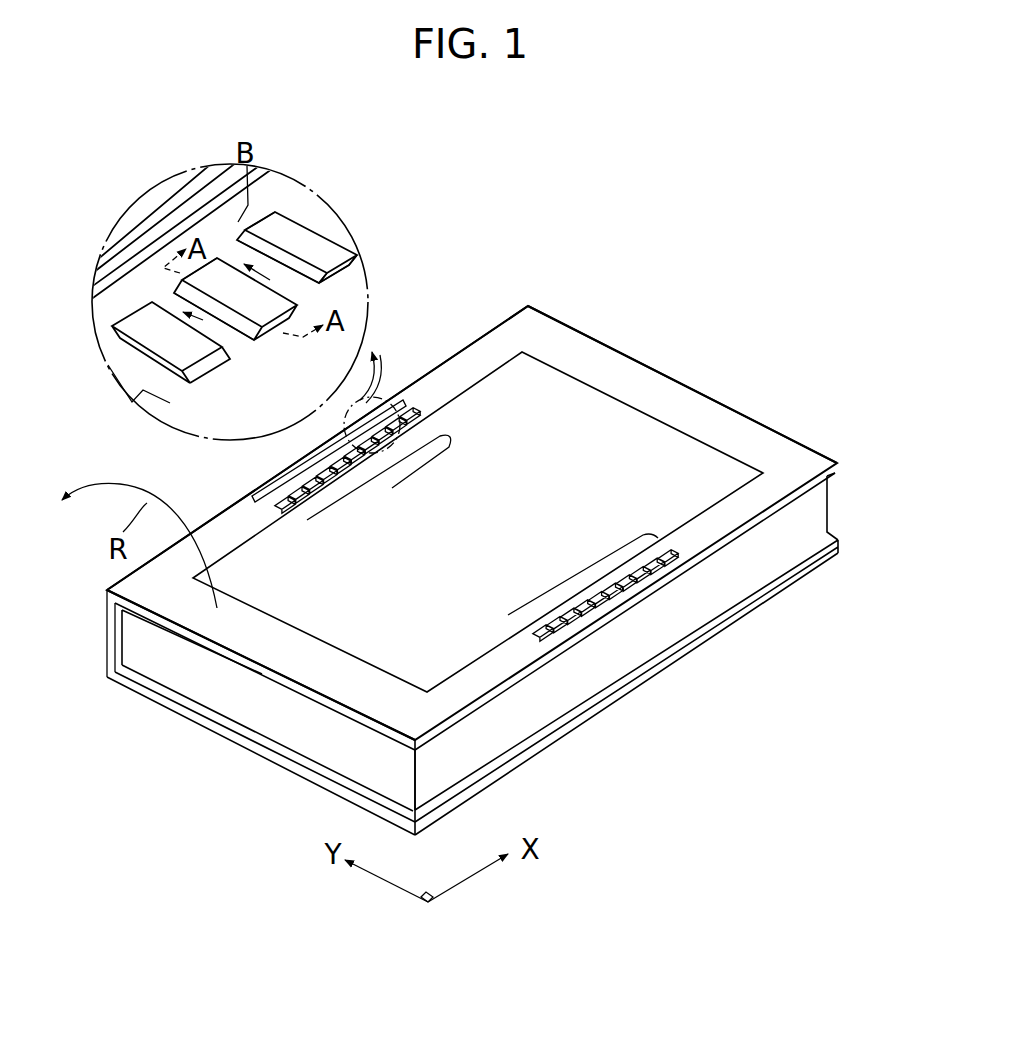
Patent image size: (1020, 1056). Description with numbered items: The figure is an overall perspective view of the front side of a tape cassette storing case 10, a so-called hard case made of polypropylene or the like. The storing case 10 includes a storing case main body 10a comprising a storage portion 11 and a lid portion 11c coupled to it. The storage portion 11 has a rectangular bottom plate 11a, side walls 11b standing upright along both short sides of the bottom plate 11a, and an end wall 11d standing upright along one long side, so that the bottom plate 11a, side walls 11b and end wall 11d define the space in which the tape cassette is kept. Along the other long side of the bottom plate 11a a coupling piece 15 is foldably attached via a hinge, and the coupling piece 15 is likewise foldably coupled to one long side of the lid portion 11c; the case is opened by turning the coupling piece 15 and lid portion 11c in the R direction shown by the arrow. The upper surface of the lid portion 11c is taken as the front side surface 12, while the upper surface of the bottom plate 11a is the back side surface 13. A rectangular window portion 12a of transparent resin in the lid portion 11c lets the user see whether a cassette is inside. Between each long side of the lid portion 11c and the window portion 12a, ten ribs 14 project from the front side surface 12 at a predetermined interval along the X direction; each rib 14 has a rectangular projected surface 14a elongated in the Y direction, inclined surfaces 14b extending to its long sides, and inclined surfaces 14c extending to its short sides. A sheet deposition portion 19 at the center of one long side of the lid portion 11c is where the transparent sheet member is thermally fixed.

The tape cassette storing case 10 is at (677, 318).
The storing case main body 10a is at (746, 396).
The storage portion 11 is at (830, 500).
The bottom plate 11a is at (570, 686).
The side walls 11b is at (265, 710).
The lid portion 11c is at (585, 343).
The end wall 11d is at (777, 548).
The front side surface 12 is at (763, 443).
The window portion 12a is at (618, 432).
The back side surface 13 is at (722, 630).
The ribs 14 is at (314, 232).
The projected surface 14a is at (348, 265).
The inclined surfaces (first inclined surfaces) 14b is at (270, 236).
The inclined surfaces (second inclined surfaces) 14c is at (295, 306).
The coupling piece 15 is at (107, 638).
The sheet deposition portion 19 is at (212, 198).